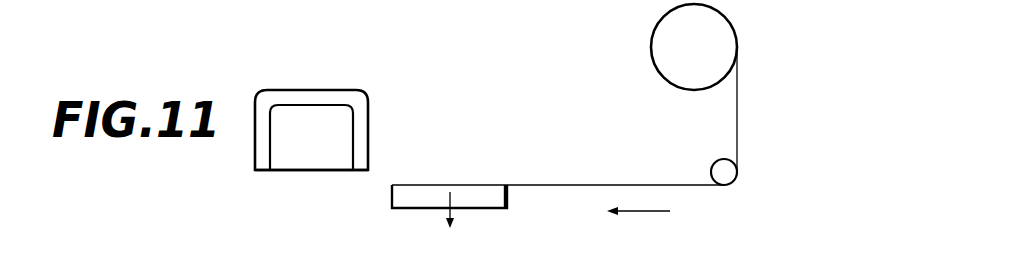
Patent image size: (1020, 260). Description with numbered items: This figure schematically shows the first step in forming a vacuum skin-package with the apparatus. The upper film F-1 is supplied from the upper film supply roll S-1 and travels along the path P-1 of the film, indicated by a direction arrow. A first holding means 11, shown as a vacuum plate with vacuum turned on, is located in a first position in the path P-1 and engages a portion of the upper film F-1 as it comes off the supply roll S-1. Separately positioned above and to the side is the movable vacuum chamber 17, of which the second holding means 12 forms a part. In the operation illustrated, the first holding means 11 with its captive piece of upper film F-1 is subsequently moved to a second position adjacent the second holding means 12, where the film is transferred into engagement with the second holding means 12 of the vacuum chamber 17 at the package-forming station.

The movable vacuum chamber 17 is at (303, 90).
The second holding means 12 is at (355, 173).
The first holding means 11 is at (500, 197).
The upper film F-1 is at (580, 185).
The upper film supply roll S-1 is at (694, 94).
The path of the film P-1 is at (663, 212).